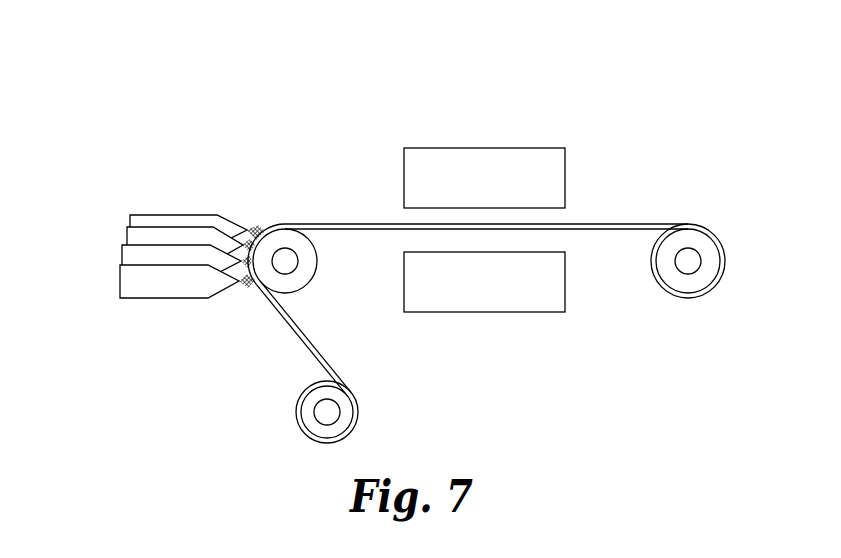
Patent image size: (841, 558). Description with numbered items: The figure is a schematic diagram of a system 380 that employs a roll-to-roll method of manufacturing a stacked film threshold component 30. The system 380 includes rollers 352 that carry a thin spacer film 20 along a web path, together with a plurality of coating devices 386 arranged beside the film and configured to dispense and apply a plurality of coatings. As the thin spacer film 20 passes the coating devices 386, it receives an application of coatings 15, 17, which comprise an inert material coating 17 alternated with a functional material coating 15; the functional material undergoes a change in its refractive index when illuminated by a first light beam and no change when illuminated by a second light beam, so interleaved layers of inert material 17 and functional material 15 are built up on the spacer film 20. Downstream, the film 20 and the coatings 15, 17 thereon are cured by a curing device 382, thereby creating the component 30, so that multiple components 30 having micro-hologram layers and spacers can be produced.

The system 380 is at (419, 231).
The curing device 382 is at (385, 127).
The component 30 is at (742, 216).
The rollers 352 is at (302, 277).
The coating devices 386 is at (130, 218).
The functional material coating 15 is at (244, 231).
The inert material coating 17 is at (249, 230).
The thin spacer film 20 is at (318, 357).